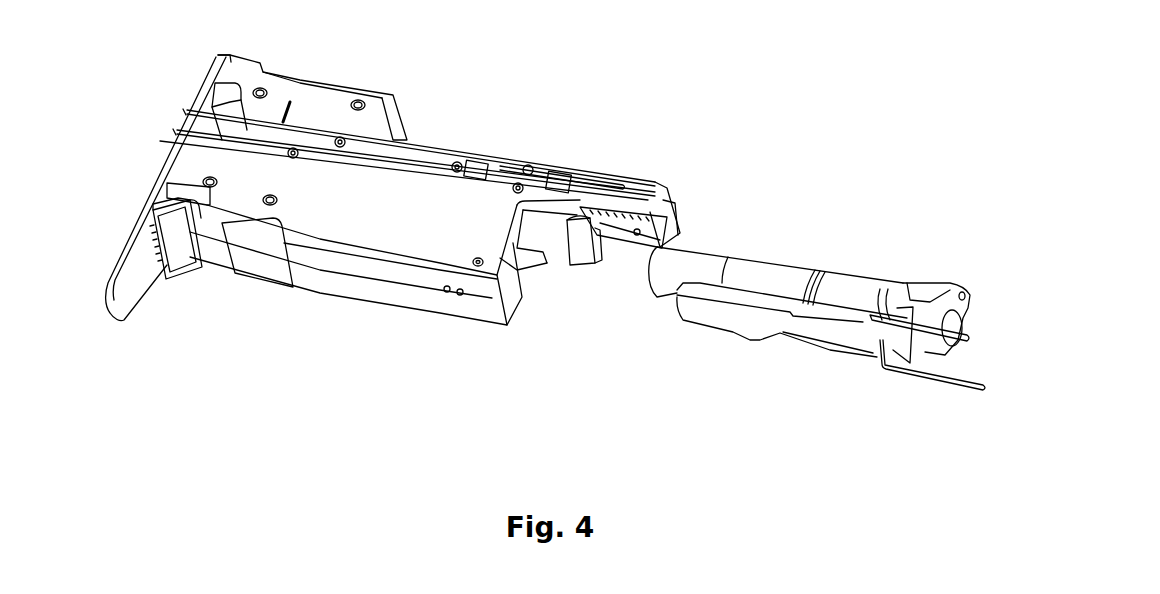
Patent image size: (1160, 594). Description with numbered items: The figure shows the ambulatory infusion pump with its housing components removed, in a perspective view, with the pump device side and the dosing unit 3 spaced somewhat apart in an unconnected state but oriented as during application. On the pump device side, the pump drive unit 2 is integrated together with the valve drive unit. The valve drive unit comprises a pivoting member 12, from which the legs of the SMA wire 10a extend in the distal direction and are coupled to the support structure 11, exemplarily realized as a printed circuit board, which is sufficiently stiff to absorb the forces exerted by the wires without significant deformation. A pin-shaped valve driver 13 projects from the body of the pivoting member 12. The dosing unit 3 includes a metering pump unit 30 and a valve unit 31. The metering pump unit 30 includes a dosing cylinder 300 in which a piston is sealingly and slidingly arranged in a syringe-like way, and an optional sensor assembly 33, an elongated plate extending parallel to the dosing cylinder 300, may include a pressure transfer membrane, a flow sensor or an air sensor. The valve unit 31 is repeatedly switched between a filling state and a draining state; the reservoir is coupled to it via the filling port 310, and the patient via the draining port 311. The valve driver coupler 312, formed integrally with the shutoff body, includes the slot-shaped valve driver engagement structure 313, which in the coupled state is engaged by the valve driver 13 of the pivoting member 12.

The pump drive unit 2 is at (378, 225).
The dosing unit 3 is at (816, 263).
The SMA wire 10a is at (422, 148).
The support structure 11 is at (127, 295).
The pivoting member 12 is at (666, 222).
The valve driver 13 is at (600, 220).
The metering pump unit 30 is at (781, 169).
The dosing cylinder 300 is at (757, 270).
The valve unit 31 is at (929, 225).
The sensor assembly 33 is at (705, 337).
The filling port 310 is at (916, 401).
The draining port 311 is at (920, 337).
The valve driver coupler 312 is at (930, 290).
The valve driver engagement structure 313 is at (964, 292).